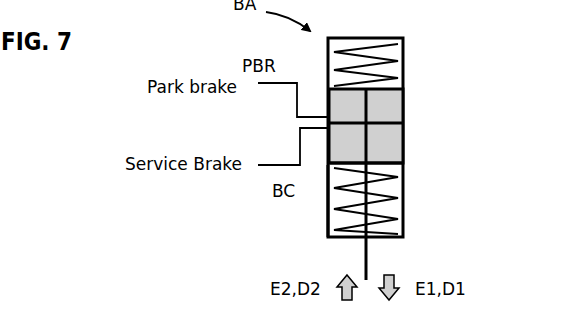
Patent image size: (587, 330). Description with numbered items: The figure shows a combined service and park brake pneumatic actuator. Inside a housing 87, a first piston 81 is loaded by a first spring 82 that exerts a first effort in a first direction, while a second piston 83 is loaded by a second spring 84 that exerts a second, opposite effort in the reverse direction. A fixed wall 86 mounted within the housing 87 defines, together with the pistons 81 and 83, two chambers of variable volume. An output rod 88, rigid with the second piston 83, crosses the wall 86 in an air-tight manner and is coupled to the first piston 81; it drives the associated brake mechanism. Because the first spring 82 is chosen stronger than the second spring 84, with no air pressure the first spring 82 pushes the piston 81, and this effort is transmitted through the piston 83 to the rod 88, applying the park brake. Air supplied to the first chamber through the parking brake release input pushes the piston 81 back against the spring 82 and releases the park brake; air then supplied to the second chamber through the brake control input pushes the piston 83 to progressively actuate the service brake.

The first piston 81 is at (402, 88).
The first spring 82 is at (366, 50).
The second piston 83 is at (402, 164).
The second spring 84 is at (393, 199).
The fixed wall 86 is at (403, 115).
The housing 87 is at (327, 209).
The output rod 88 is at (368, 256).